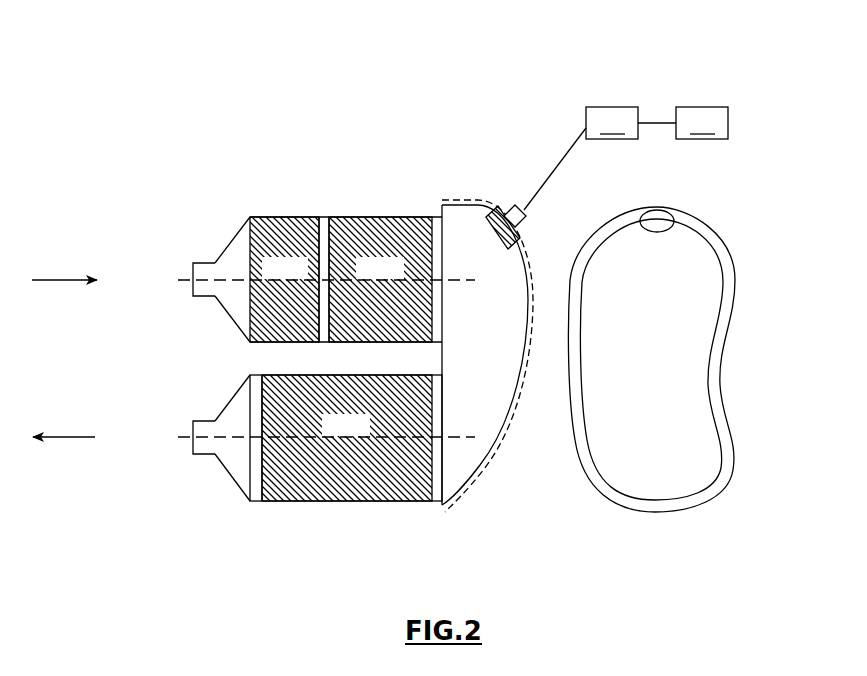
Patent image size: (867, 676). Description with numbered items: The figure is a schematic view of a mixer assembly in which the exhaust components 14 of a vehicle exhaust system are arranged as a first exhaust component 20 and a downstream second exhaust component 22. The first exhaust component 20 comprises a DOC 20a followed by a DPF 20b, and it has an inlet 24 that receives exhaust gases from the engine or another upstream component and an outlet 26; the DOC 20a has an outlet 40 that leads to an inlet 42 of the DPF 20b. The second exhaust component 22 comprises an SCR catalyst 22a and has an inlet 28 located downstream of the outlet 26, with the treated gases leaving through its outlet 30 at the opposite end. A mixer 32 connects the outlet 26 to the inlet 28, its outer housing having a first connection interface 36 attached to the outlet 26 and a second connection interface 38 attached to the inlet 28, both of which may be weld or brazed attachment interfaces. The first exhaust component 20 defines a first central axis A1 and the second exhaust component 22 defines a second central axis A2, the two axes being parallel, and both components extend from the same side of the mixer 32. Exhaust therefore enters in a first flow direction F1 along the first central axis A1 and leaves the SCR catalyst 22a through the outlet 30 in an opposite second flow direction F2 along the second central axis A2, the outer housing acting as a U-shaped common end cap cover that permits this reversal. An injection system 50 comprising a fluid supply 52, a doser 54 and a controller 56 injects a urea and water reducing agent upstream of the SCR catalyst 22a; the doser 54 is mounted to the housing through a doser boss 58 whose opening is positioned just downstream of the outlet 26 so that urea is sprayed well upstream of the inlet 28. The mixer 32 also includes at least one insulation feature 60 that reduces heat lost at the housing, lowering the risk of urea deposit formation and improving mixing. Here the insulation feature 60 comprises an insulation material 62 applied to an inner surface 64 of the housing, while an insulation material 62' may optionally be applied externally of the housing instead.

The exhaust components 14 is at (282, 162).
The first exhaust component 20 is at (378, 162).
The DOC 20a is at (266, 217).
The DPF 20b is at (385, 217).
The second exhaust component 22 is at (270, 532).
The SCR catalyst 22a is at (348, 502).
The inlet 24 is at (205, 268).
The outlet 26 is at (437, 227).
The inlet 28 is at (434, 505).
The outlet 30 is at (200, 454).
The mixer 32 is at (545, 236).
The first connection interface 36 is at (445, 247).
The second connection interface 38 is at (443, 477).
The outlet 40 is at (324, 217).
The inlet 42 is at (324, 342).
The injection system 50 is at (583, 92).
The fluid supply 52 is at (581, 158).
The doser 54 is at (503, 210).
The controller 56 is at (683, 123).
The doser boss 58 is at (535, 215).
The insulation feature 60 is at (583, 477).
The insulation material 62 is at (706, 520).
The insulation material 62' is at (539, 464).
The inner surface 64 is at (734, 459).
The first central axis A1 is at (181, 287).
The second central axis A2 is at (180, 421).
The first flow direction F1 is at (61, 280).
The second flow direction F2 is at (63, 437).